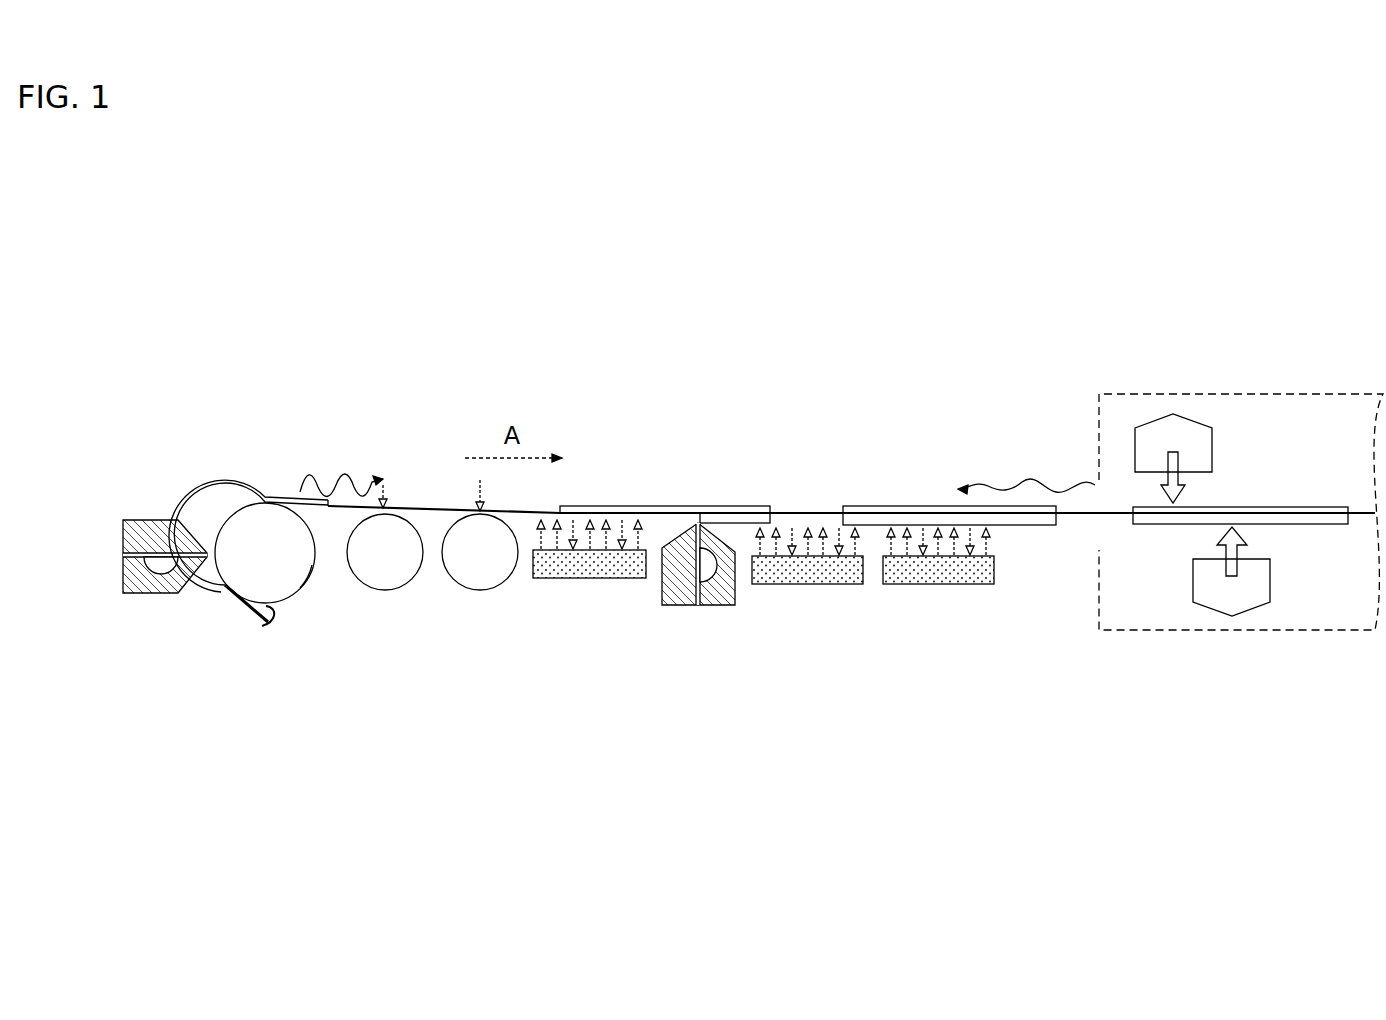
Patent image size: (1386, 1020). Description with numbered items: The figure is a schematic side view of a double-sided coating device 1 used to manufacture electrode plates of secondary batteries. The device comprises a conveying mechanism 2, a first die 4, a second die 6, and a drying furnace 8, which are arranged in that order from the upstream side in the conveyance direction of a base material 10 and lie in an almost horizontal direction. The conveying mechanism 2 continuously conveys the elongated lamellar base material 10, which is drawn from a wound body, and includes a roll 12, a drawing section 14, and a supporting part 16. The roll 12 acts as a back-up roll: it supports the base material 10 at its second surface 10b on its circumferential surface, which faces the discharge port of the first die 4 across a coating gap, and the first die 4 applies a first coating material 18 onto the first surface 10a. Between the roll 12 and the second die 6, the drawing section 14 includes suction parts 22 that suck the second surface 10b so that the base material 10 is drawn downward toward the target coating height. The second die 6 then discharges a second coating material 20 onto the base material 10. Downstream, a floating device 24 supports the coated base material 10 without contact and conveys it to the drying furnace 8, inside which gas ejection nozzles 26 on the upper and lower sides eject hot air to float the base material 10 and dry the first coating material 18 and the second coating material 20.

The double-sided coating device 1 is at (769, 789).
The conveying mechanism 2 is at (814, 430).
The first die 4 is at (140, 596).
The second die 6 is at (730, 607).
The drying furnace 8 is at (1225, 394).
The base material 10 is at (234, 601).
The first surface 10a is at (244, 607).
The second surface 10b is at (282, 612).
The roll 12 is at (297, 600).
The drawing section 14 is at (432, 608).
The supporting part 16 is at (592, 580).
The first coating material 18 is at (262, 494).
The second coating material 20 is at (748, 524).
The suction part 22 is at (388, 591).
The floating device 24 is at (822, 586).
The gas ejection nozzle 26 is at (1135, 447).